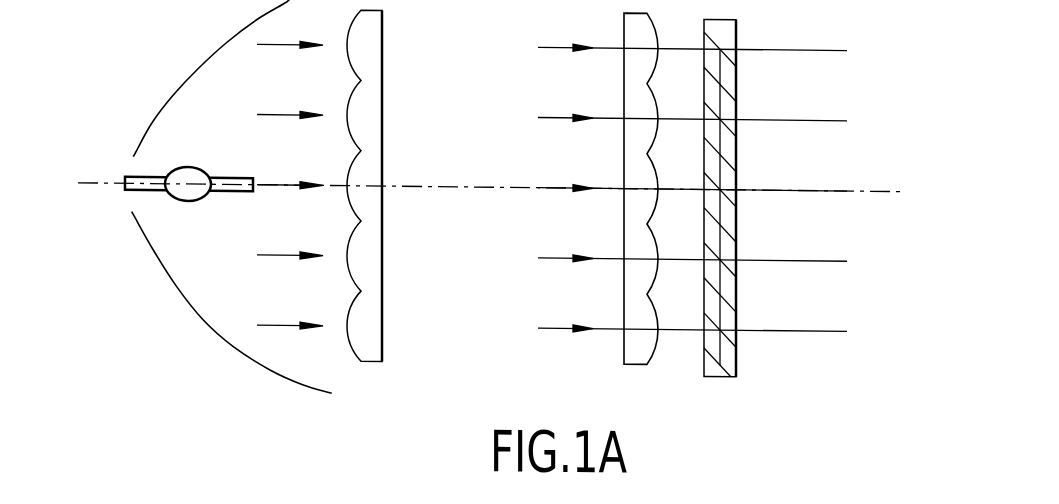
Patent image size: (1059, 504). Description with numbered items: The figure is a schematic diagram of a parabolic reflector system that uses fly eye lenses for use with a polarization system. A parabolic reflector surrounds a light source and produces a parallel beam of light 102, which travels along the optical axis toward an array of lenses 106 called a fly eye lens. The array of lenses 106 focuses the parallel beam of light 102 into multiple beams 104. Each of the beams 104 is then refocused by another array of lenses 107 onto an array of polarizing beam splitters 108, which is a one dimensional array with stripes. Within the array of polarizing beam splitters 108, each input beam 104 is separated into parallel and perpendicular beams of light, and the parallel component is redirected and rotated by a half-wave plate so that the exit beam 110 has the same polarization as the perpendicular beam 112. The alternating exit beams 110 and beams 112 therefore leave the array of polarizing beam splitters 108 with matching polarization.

The parallel beam of light 102 is at (290, 167).
The beams 104 is at (692, 171).
The array of lenses 106 is at (370, 360).
The another array of lenses 107 is at (623, 347).
The array of polarizing beam splitters 108 is at (733, 371).
The exit beam 110 is at (847, 79).
The perpendicular beam of light 112 is at (847, 44).